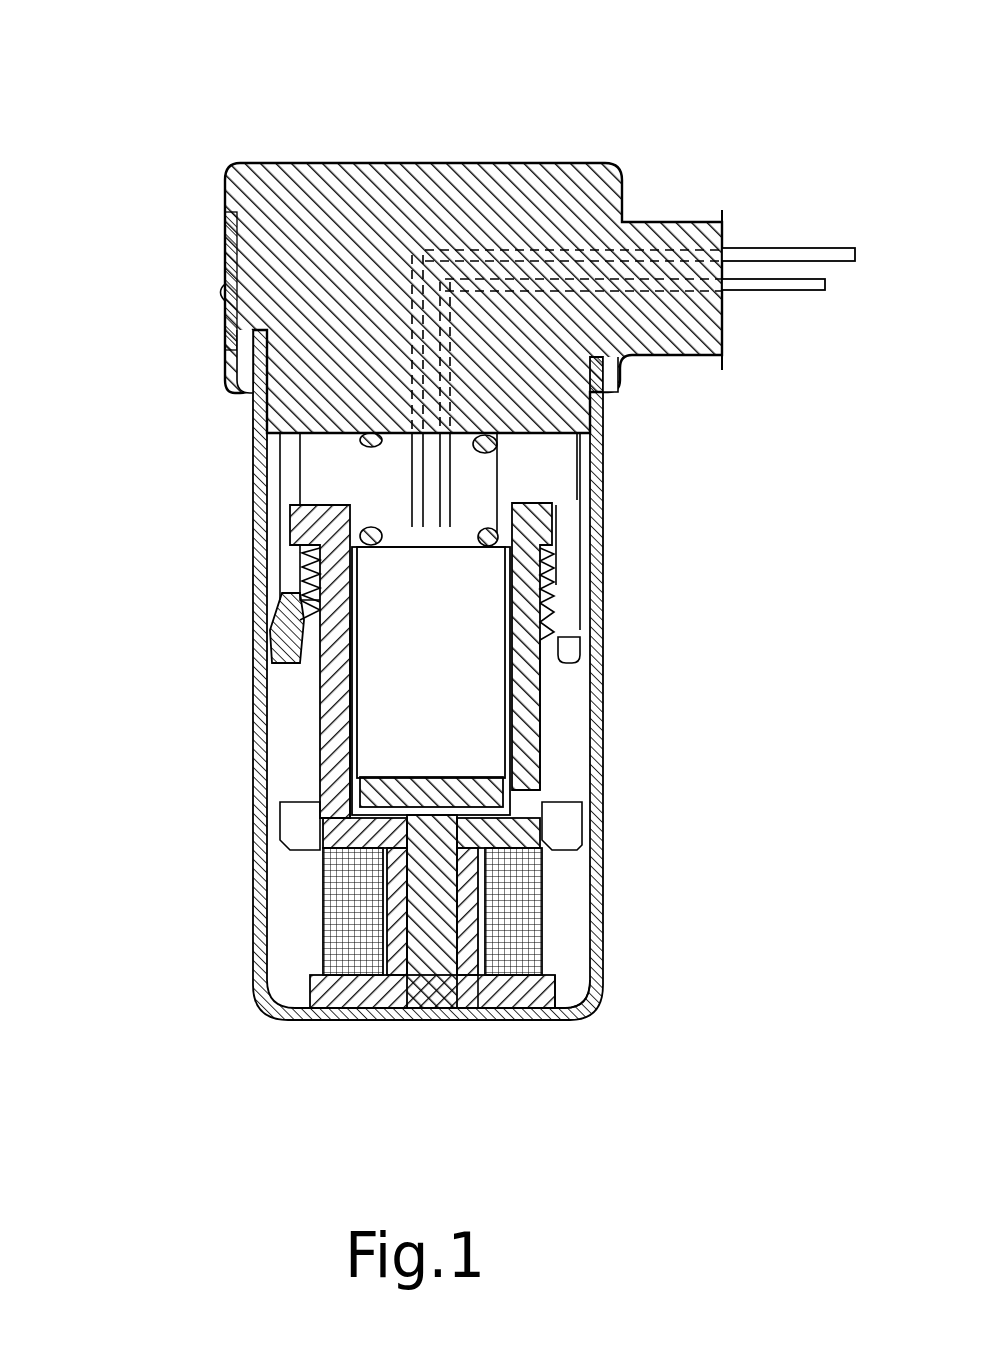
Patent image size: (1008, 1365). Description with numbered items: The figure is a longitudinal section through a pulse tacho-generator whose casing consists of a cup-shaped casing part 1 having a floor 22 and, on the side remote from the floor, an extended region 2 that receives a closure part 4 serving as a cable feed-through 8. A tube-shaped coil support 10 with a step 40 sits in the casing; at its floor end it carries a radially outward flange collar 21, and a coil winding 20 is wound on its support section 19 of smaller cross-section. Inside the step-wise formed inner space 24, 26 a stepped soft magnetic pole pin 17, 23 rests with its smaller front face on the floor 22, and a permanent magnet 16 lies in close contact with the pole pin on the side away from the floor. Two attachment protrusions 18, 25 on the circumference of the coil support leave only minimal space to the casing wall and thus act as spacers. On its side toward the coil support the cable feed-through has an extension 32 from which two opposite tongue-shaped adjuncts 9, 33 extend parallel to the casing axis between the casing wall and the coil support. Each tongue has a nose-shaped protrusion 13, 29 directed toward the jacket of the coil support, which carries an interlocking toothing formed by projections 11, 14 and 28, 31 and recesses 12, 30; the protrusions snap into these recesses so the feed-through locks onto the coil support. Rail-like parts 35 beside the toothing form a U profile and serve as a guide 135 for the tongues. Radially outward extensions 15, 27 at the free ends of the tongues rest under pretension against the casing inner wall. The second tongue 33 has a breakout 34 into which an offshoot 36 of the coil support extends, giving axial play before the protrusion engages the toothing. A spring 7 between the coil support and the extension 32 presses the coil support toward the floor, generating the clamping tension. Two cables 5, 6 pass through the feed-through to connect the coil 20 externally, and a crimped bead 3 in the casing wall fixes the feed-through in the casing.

The cup-shaped casing part 1 is at (253, 423).
The extended region 2 is at (224, 298).
The bead 3 is at (228, 290).
The closure part 4 is at (236, 176).
The cable 5 is at (444, 255).
The cable 6 is at (478, 287).
The spring 7 is at (484, 490).
The cable feed-through 8 is at (690, 242).
The tongue-shaped adjunct 9 is at (572, 457).
The coil support 10 is at (548, 500).
The projection 11 is at (552, 548).
The recess 12 is at (553, 597).
The nose-shaped protrusion 13 is at (562, 640).
The projection 14 is at (598, 628).
The guide 135 is at (588, 652).
The extension 15 is at (470, 675).
The permanent magnet 16 is at (560, 828).
The pole pin 17 is at (590, 835).
The attachment protrusion 18 is at (545, 845).
The support section 19 is at (485, 888).
The coil winding 20 is at (585, 990).
The flange collar 21 is at (568, 1000).
The floor 22 is at (480, 1005).
The pole pin 23 is at (435, 1000).
The inner space 24 is at (383, 1010).
The attachment protrusion 25 is at (300, 836).
The inner space 26 is at (320, 757).
The extension 27 is at (257, 838).
The projection 28 is at (270, 645).
The nose-shaped protrusion 29 is at (270, 628).
The recess 30 is at (290, 588).
The projection 31 is at (300, 552).
The extension 32 is at (253, 403).
The tongue-shaped adjunct 33 is at (292, 478).
The breakout 34 is at (300, 506).
The rail-like parts 35 is at (556, 562).
The offshoot 36 is at (253, 455).
The step 40 is at (313, 992).